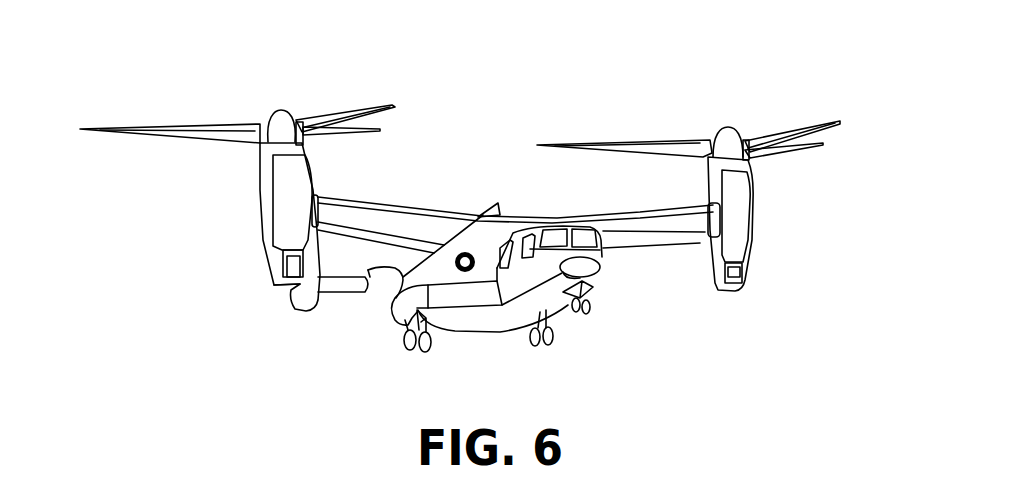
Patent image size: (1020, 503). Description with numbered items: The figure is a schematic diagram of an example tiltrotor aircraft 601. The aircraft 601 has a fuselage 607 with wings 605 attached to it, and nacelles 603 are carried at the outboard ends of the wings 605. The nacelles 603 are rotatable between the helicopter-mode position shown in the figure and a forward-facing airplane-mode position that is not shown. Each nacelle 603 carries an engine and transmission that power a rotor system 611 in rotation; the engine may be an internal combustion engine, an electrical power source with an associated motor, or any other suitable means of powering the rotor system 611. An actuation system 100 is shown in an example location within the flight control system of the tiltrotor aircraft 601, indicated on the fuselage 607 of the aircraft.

The tiltrotor aircraft 601 is at (547, 93).
The actuation system 100 is at (467, 272).
The nacelles 603 is at (253, 228).
The wings 605 is at (390, 198).
The fuselage 607 is at (603, 271).
The rotor systems 611 is at (362, 108).